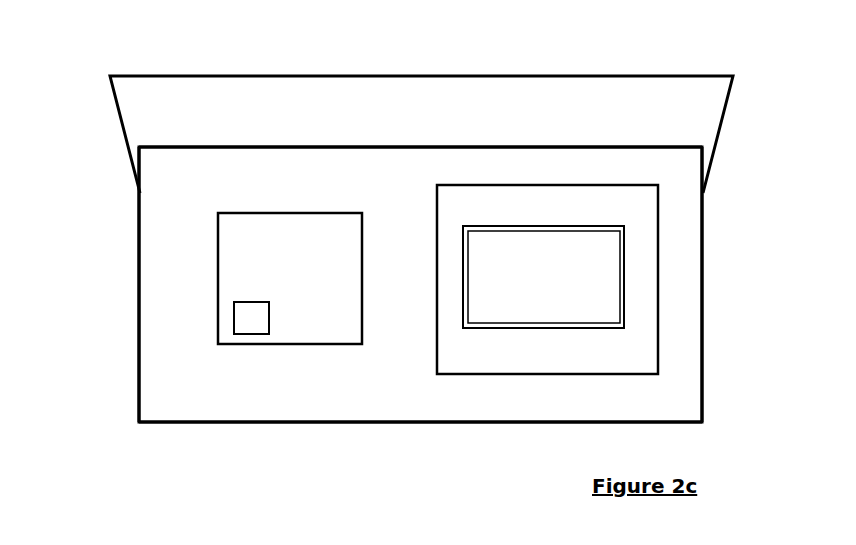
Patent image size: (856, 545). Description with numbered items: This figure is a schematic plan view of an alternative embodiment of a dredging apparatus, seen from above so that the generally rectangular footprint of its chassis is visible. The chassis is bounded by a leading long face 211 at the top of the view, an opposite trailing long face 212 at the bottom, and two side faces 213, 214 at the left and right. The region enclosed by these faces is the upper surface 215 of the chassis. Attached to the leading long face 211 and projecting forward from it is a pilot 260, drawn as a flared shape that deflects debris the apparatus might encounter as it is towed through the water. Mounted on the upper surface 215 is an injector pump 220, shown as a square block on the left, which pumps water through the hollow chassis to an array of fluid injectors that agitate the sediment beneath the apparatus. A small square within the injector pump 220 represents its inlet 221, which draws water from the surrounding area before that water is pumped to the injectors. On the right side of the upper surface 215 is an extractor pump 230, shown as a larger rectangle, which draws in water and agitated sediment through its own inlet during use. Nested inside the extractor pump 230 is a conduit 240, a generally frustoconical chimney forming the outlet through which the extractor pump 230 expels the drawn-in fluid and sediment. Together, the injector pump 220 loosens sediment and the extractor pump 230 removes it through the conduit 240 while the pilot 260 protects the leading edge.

The pilot 260 is at (421, 115).
The leading long face 211 is at (420, 120).
The trailing long face 212 is at (420, 446).
The side face 213 is at (108, 284).
The side face 214 is at (742, 284).
The upper surface 215 is at (420, 284).
The injector pump 220 is at (222, 274).
The inlet 221 is at (167, 355).
The extractor pump 230 is at (613, 253).
The conduit 240 is at (616, 297).